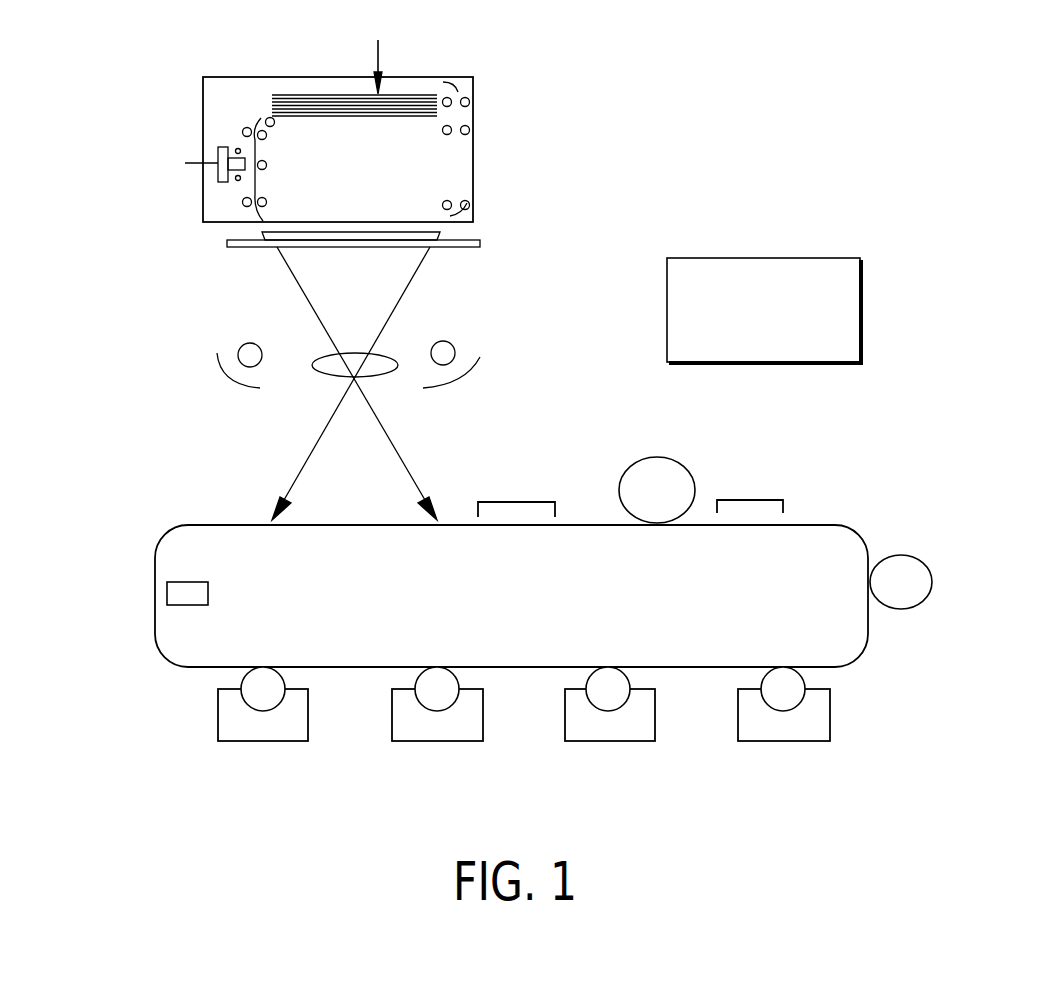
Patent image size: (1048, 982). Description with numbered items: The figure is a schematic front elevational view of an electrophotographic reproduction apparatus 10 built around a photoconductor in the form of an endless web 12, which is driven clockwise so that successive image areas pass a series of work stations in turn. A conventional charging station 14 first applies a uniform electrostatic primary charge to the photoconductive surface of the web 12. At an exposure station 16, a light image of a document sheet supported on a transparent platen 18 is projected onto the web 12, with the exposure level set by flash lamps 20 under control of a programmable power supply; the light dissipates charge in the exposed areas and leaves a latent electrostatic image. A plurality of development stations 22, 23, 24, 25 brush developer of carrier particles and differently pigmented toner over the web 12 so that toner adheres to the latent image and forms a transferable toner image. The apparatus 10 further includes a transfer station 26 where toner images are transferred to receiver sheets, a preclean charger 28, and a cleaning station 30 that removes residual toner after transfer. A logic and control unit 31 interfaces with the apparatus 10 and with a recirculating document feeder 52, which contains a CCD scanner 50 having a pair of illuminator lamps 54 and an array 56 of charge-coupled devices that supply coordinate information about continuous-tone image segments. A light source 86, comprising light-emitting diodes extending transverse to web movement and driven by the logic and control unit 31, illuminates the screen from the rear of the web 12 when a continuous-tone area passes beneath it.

The electrophotographic reproduction apparatus 10 is at (930, 338).
The web 12 is at (153, 556).
The charging station 14 is at (513, 502).
The exposure station 16 is at (184, 455).
The transparent platen 18 is at (242, 248).
The flash lamps 20 is at (452, 343).
The development station 22 is at (262, 738).
The development station 23 is at (438, 737).
The development station 24 is at (607, 735).
The development station 25 is at (792, 733).
The transfer station 26 is at (932, 572).
The preclean charger 28 is at (763, 497).
The cleaning station 30 is at (650, 457).
The logic and control unit 31 is at (718, 272).
The CCD scanner 50 is at (218, 152).
The recirculating document feeder 52 is at (475, 165).
The illuminator lamps 54 is at (222, 183).
The array of charge-coupled devices 56 is at (226, 146).
The light source 86 is at (210, 597).